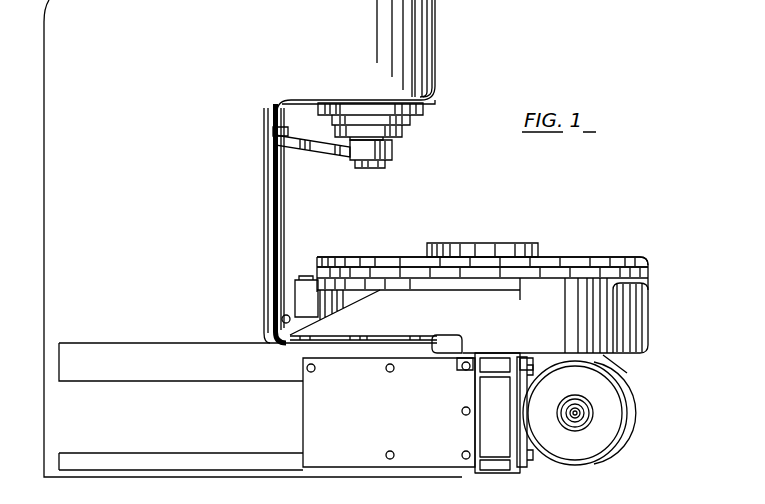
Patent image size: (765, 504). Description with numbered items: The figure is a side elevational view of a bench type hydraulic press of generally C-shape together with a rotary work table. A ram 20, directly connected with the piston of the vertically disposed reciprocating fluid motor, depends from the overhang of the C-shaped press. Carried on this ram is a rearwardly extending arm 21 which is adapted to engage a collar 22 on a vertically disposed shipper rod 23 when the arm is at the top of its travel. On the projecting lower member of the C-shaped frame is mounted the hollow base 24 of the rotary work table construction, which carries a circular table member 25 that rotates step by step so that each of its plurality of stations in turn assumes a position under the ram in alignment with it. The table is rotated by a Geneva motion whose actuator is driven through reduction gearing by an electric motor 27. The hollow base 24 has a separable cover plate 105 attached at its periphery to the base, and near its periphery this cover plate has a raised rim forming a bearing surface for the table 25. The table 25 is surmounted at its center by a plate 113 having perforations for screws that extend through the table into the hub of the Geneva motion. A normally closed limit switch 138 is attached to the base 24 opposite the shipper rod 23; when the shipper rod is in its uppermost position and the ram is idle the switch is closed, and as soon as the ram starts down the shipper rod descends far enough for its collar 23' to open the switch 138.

The ram 20 is at (392, 163).
The arm 21 is at (317, 156).
The collar 22 is at (284, 134).
The shipper rod 23 is at (289, 223).
The collar 23' is at (265, 309).
The hollow base 24 is at (620, 327).
The circular table member 25 is at (612, 253).
The electric motor 27 is at (598, 447).
The cover plate 105 is at (650, 266).
The plate 113 is at (512, 243).
The limit switch 138 is at (298, 280).